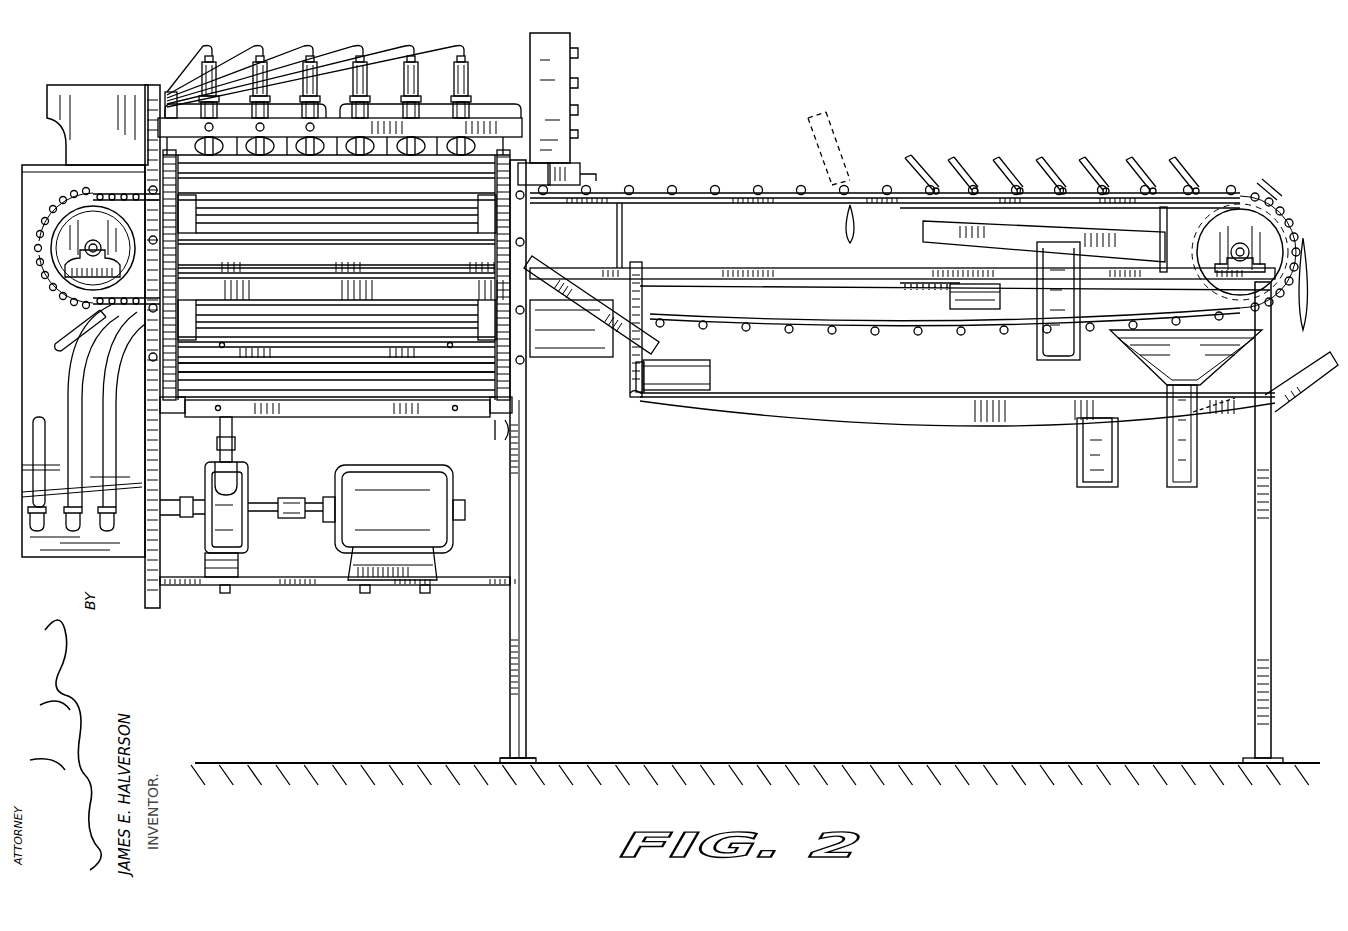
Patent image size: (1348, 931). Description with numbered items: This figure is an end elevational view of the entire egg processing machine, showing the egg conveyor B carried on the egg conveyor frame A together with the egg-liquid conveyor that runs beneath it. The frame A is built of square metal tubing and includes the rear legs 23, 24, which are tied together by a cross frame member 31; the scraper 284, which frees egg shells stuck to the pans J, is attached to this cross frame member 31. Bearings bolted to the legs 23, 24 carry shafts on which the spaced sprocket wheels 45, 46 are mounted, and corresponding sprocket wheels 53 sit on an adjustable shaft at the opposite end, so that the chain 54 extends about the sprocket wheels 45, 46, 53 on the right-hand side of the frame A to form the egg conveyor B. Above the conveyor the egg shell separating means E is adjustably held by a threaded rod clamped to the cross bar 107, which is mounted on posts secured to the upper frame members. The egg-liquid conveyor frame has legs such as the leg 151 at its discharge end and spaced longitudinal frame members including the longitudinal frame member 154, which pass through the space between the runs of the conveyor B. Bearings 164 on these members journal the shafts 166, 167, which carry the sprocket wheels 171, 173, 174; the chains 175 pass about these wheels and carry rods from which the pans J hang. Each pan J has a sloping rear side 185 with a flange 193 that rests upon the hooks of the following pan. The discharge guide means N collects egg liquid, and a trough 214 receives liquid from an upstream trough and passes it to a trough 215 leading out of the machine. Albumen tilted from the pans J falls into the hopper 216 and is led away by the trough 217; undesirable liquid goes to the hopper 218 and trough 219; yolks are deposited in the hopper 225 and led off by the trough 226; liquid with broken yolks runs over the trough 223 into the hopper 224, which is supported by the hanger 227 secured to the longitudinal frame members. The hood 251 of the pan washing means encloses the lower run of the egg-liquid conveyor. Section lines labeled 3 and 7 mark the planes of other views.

The section line 3-3 indicator 3 is at (25, 15).
The section line 7-7 indicator 7 is at (570, 394).
The rear leg 23 is at (160, 606).
The rear leg 24 is at (508, 658).
The cross frame member 31 is at (497, 440).
The sprocket wheel 45 is at (198, 233).
The sprocket wheel 46 is at (210, 322).
The sprocket wheel 53 is at (480, 418).
The chain 54 is at (183, 414).
The cross bar 107 is at (482, 118).
The leg 151 is at (1270, 560).
The longitudinal frame member 154 is at (700, 268).
The bearing 164 is at (60, 192).
The shaft 166 is at (95, 246).
The shaft 167 is at (1238, 246).
The sprocket wheel 171 is at (90, 212).
The sprocket wheel 173 is at (112, 274).
The sprocket wheel 174 is at (1242, 206).
The chain 175 is at (95, 365).
The sloping rear side 185 is at (905, 161).
The flange 193 is at (1000, 160).
The trough 214 is at (578, 293).
The trough 215 is at (715, 373).
The hopper 216 is at (1115, 226).
The trough 217 is at (1062, 357).
The hopper 218 is at (890, 320).
The trough 219 is at (985, 310).
The trough 223 is at (1312, 386).
The hopper 224 is at (1032, 420).
The hopper 225 is at (1152, 352).
The trough 226 is at (1187, 490).
The hanger 227 is at (642, 297).
The hood 251 is at (606, 352).
The scraper 284 is at (410, 422).
The egg conveyor frame A is at (538, 722).
The egg conveyor B is at (348, 375).
The egg shell separating means E is at (360, 52).
The pan J is at (1082, 163).
The discharge guide means N is at (655, 390).